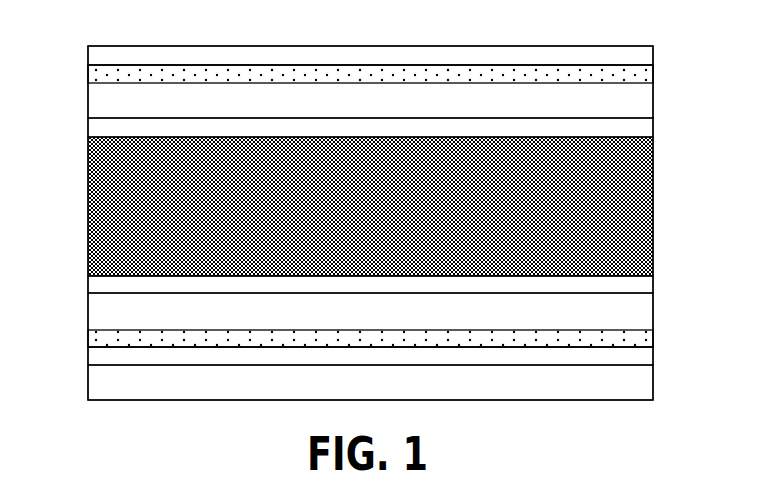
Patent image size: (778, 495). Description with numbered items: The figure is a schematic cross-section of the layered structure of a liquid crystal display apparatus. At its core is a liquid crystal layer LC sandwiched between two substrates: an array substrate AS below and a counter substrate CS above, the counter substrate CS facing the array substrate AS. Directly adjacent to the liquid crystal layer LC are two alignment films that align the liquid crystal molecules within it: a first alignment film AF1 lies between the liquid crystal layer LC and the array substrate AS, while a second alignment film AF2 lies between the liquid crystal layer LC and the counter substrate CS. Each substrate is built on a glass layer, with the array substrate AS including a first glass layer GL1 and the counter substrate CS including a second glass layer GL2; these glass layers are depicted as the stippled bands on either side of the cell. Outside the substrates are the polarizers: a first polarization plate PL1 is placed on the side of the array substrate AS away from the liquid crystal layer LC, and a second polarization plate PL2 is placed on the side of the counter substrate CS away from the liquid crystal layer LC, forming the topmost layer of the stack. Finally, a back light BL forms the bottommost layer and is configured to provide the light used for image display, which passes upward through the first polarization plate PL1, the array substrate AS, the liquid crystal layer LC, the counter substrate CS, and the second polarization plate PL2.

The second polarization plate PL2 is at (660, 55).
The second glass layer GL2 is at (660, 73).
The second alignment film AF2 is at (660, 127).
The liquid crystal layer LC is at (660, 205).
The first alignment film AF1 is at (660, 285).
The first glass layer GL1 is at (660, 338).
The first polarization plate PL1 is at (660, 357).
The back light BL is at (660, 385).
The counter substrate CS is at (85, 65).
The array substrate AS is at (85, 293).